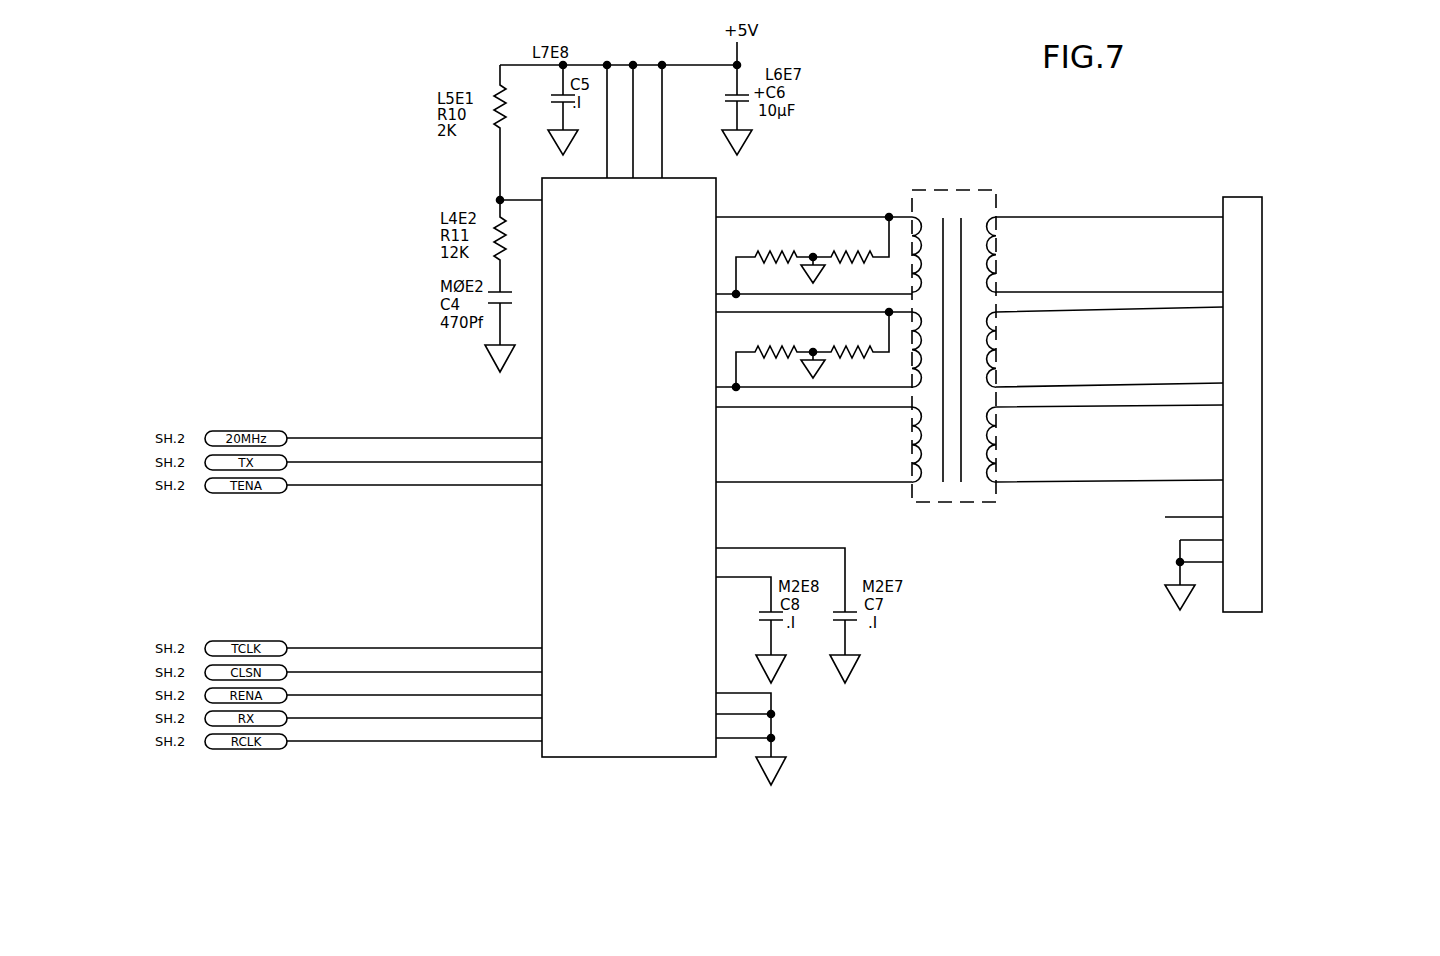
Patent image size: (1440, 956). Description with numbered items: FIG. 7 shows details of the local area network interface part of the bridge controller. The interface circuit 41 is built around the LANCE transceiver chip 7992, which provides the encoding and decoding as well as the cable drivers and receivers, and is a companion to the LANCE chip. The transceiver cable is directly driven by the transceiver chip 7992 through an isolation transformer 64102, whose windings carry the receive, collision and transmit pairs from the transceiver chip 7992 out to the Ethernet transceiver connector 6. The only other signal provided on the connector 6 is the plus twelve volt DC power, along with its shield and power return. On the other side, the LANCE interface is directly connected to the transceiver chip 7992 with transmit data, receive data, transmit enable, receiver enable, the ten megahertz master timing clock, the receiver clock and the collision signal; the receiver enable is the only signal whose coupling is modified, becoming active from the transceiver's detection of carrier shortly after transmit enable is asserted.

The Ethernet interface circuit 41 is at (862, 150).
The Ethernet serial interface adapter IC 7992 is at (629, 458).
The isolation transformer PE- 64102 is at (957, 327).
The Ethernet transceiver connector J6 6 is at (1254, 385).